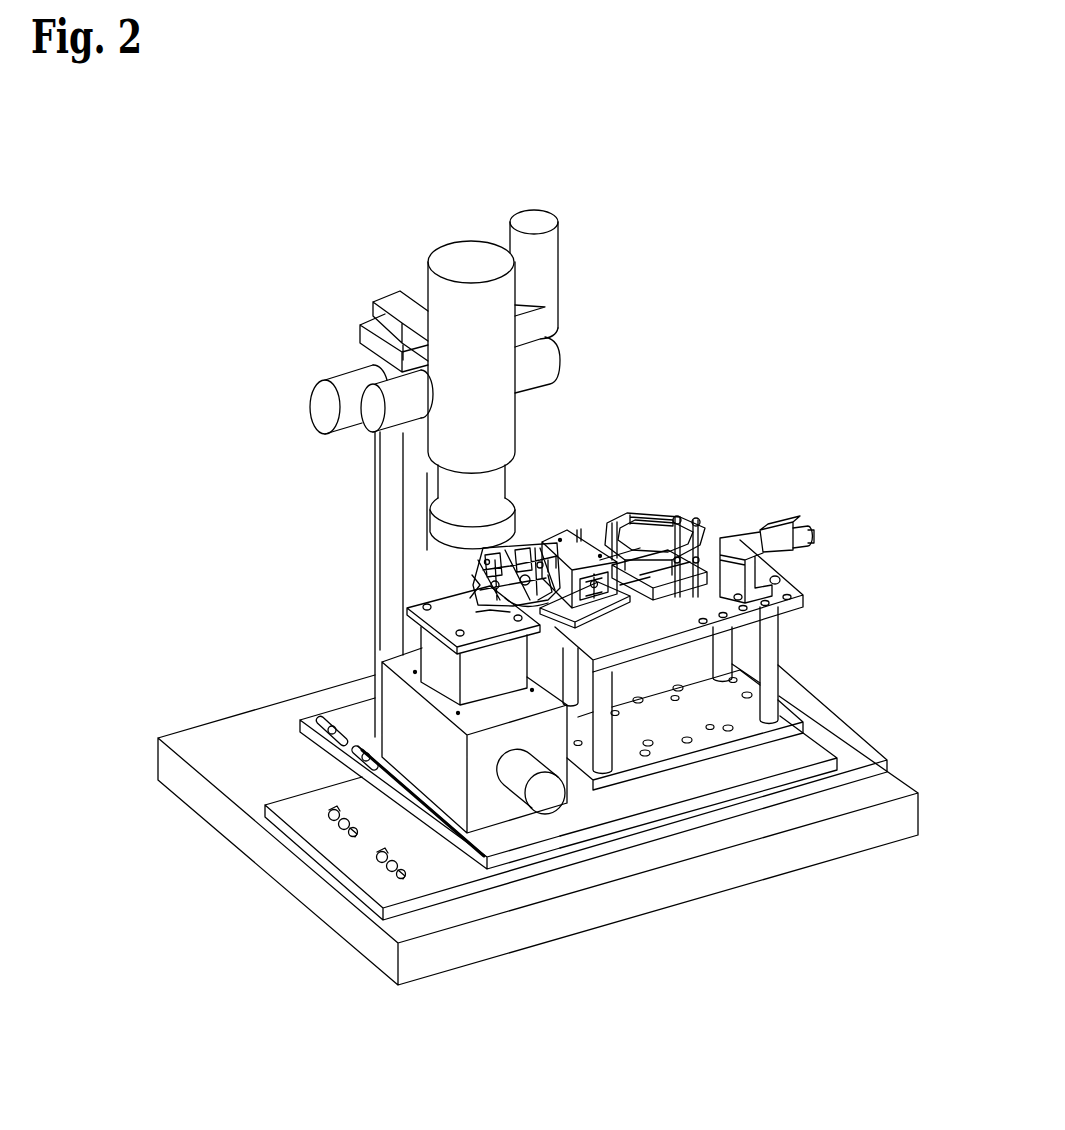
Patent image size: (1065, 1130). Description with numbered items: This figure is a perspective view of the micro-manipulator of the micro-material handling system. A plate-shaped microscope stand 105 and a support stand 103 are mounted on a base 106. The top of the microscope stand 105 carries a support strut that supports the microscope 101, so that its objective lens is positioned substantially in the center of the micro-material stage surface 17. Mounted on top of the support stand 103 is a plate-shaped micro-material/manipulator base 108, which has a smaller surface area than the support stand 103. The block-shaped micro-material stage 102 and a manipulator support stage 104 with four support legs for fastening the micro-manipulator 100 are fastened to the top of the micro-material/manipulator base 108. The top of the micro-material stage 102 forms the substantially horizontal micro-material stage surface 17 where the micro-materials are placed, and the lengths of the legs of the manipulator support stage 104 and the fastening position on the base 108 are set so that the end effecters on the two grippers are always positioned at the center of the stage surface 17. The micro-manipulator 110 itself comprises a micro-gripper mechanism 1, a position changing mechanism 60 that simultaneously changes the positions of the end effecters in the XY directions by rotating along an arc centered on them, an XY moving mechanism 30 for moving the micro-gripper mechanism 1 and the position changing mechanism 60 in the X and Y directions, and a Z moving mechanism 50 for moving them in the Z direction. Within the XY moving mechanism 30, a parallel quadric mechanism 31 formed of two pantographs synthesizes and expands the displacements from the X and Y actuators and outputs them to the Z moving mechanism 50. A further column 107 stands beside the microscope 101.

The micro-manipulator 100 is at (586, 168).
The microscope 101 is at (468, 260).
The auxiliary column 107 is at (558, 260).
The micro-manipulator 110 is at (707, 385).
The position changing mechanism 60 is at (521, 543).
The Z moving mechanism 50 is at (581, 518).
The parallel quadric mechanism 31 is at (653, 518).
The XY moving mechanism 30 is at (688, 503).
The micro-gripper mechanism 1 is at (459, 567).
The micro-material stage surface 17 is at (450, 608).
The microscope stand 105 is at (325, 710).
The manipulator support stage 104 is at (772, 688).
The micro-material stage 102 is at (432, 765).
The support stand 103 is at (370, 900).
The base 106 is at (323, 903).
The micro-material/manipulator base 108 is at (665, 811).